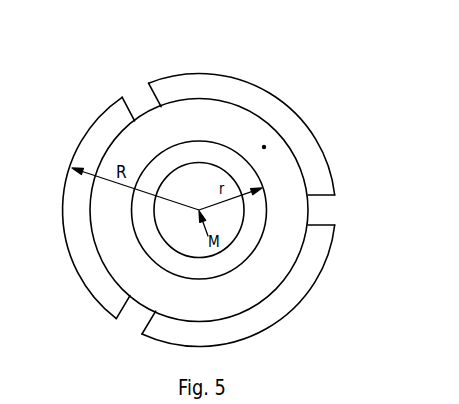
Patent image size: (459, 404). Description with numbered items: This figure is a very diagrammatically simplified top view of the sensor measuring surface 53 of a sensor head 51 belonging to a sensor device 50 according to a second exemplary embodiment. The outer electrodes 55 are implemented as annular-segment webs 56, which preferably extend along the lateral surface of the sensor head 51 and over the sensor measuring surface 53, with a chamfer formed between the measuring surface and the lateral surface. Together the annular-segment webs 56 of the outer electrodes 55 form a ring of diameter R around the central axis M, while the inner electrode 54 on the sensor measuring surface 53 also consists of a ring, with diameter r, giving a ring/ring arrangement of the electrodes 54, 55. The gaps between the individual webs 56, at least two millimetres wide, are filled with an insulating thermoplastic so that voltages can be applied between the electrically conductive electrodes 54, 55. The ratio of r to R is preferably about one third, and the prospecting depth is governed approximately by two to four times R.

The sensor device 50 is at (331, 114).
The sensor head 51 is at (358, 200).
The sensor measuring surface 53 is at (264, 147).
The inner electrode 54 is at (226, 118).
The outer electrodes 55 is at (84, 91).
The annular-segment webs 56 is at (64, 227).